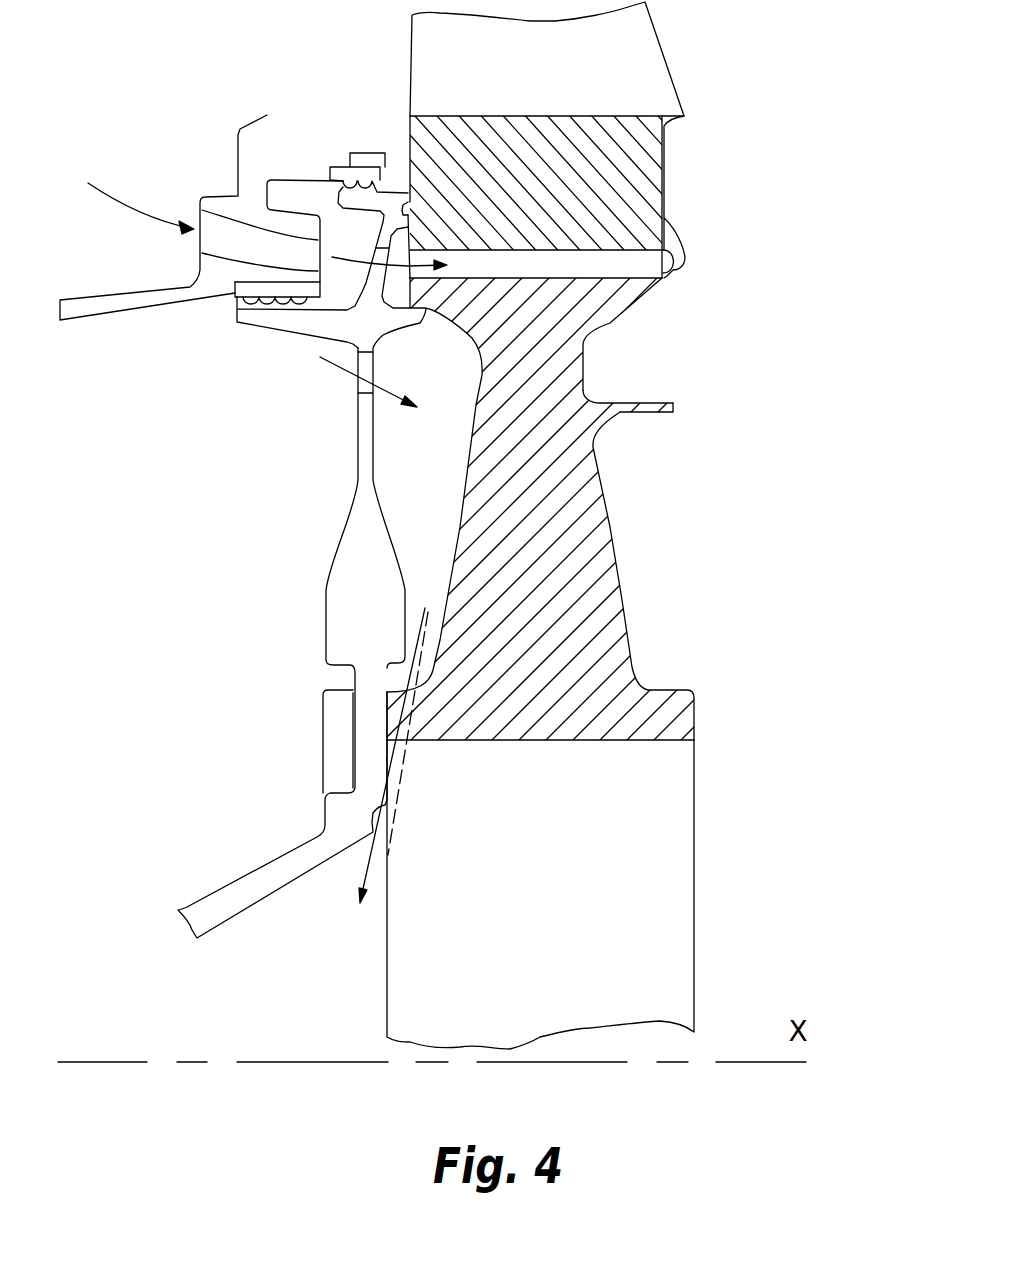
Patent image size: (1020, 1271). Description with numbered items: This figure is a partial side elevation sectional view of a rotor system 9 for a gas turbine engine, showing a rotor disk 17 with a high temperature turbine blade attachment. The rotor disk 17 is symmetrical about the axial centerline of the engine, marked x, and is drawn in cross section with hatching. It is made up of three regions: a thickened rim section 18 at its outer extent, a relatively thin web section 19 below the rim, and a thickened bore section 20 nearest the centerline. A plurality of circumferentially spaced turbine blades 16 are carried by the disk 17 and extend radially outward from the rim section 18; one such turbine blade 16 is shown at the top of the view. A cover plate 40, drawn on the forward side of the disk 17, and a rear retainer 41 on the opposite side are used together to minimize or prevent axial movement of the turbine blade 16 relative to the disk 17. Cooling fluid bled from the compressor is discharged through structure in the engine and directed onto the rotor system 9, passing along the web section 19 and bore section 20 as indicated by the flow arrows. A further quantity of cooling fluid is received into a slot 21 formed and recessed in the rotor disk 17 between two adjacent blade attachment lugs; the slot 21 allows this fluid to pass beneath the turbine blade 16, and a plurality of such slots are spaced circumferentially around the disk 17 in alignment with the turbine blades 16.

The rotor system 9 is at (780, 477).
The turbine blade 16 is at (657, 85).
The rotor disk 17 is at (567, 432).
The rim section 18 is at (628, 300).
The web section 19 is at (560, 400).
The bore section 20 is at (694, 726).
The slot 21 is at (605, 267).
The cover plate 40 is at (352, 493).
The rear retainer 41 is at (685, 262).